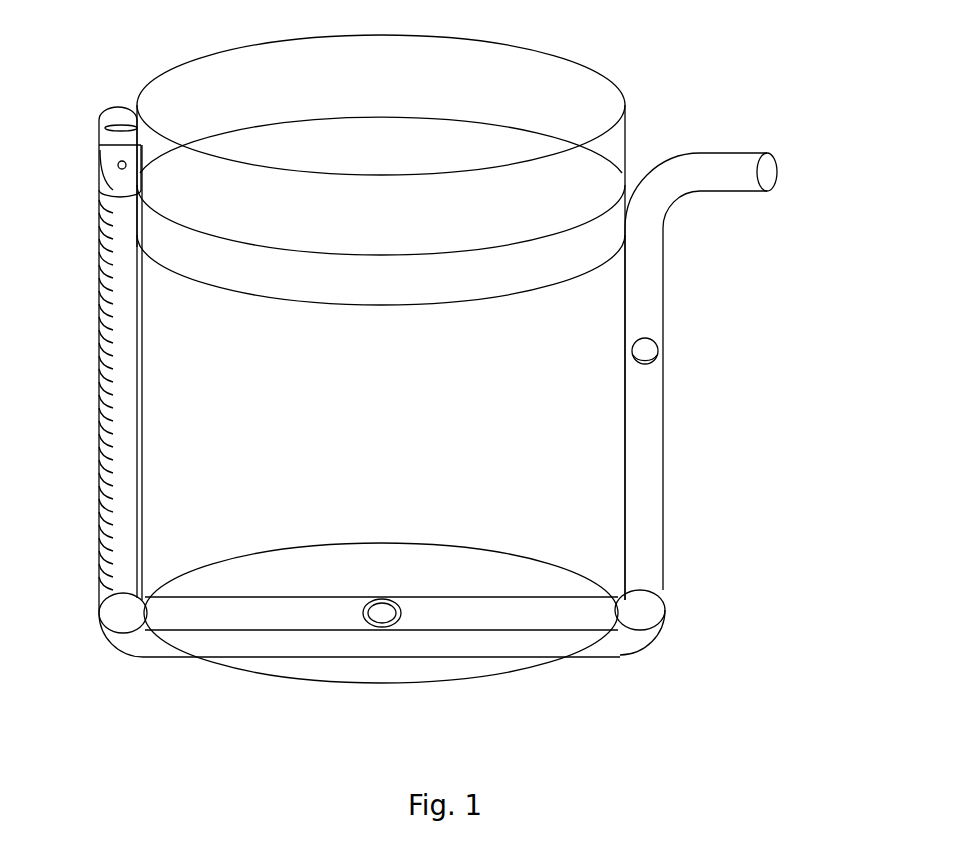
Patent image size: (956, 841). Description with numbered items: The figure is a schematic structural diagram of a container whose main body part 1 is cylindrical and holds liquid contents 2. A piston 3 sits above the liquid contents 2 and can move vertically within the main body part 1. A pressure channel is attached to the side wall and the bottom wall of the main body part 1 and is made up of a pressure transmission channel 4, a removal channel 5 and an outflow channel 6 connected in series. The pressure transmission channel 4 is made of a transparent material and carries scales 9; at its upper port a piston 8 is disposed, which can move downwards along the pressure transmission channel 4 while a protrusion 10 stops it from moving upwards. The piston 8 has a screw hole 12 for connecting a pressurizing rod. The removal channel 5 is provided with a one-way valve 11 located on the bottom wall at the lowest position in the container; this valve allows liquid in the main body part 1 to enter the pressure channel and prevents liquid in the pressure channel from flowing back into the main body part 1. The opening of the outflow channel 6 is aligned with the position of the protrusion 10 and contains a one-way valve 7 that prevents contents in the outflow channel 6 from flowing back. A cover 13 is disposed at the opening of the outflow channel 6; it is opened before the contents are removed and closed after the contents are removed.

The main body part 1 is at (563, 99).
The liquid contents 2 is at (555, 513).
The piston 3 is at (568, 192).
The pressure transmission channel 4 is at (117, 548).
The removal channel 5 is at (380, 612).
The outflow channel 6 is at (642, 555).
The one-way valve 7 is at (645, 352).
The piston 8 is at (110, 183).
The scales 9 is at (100, 312).
The protrusion 10 is at (127, 128).
The one-way valve 11 is at (383, 615).
The screw hole 12 is at (123, 163).
The cover 13 is at (767, 172).